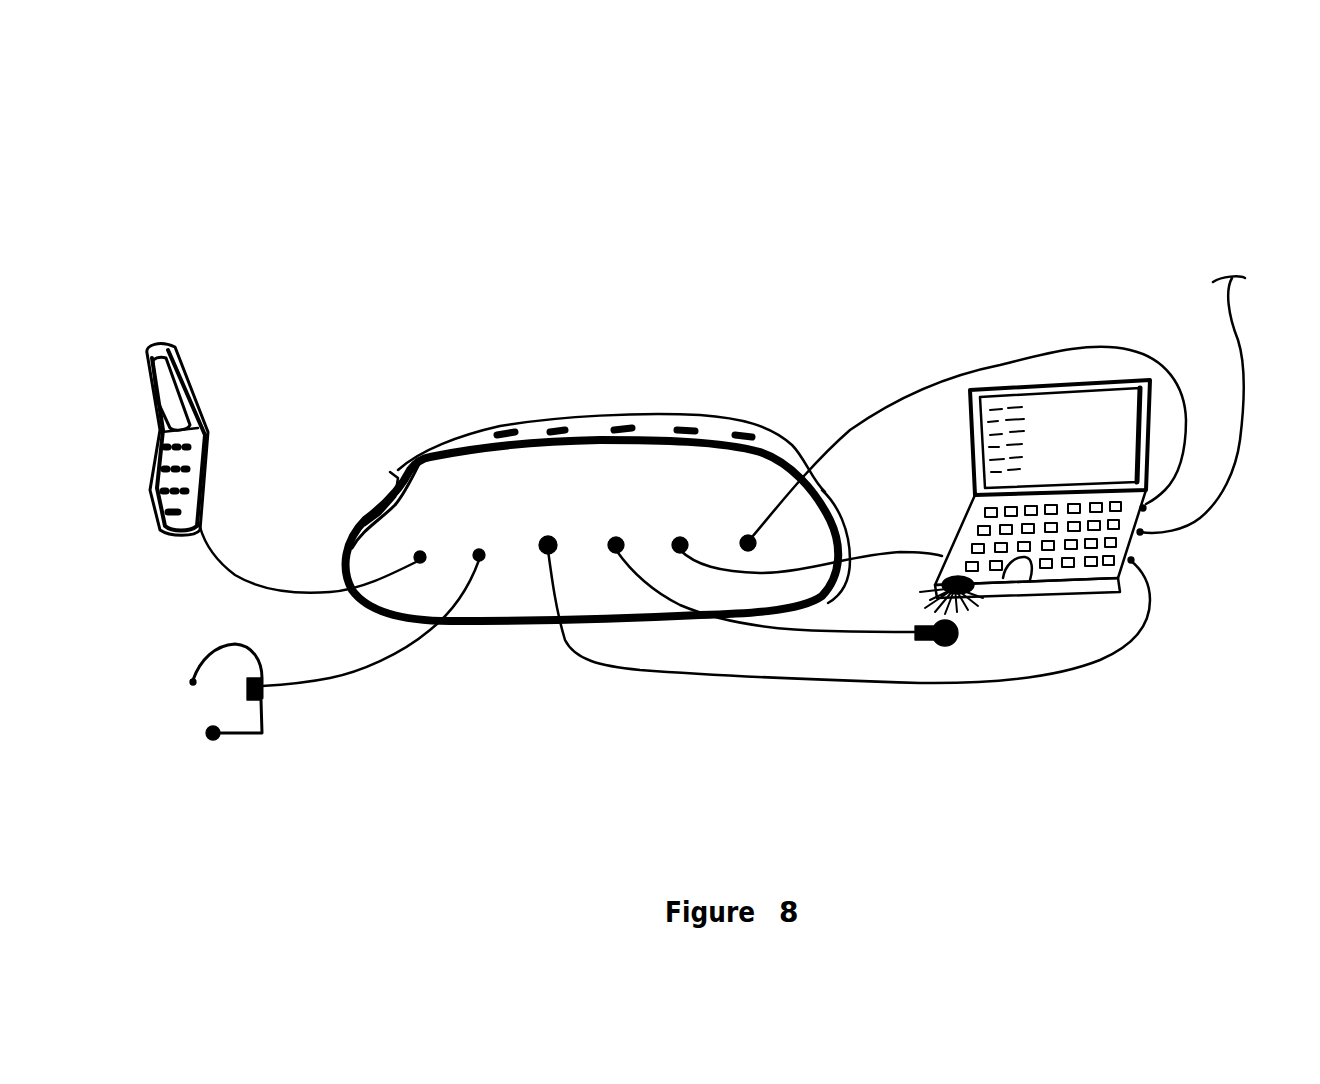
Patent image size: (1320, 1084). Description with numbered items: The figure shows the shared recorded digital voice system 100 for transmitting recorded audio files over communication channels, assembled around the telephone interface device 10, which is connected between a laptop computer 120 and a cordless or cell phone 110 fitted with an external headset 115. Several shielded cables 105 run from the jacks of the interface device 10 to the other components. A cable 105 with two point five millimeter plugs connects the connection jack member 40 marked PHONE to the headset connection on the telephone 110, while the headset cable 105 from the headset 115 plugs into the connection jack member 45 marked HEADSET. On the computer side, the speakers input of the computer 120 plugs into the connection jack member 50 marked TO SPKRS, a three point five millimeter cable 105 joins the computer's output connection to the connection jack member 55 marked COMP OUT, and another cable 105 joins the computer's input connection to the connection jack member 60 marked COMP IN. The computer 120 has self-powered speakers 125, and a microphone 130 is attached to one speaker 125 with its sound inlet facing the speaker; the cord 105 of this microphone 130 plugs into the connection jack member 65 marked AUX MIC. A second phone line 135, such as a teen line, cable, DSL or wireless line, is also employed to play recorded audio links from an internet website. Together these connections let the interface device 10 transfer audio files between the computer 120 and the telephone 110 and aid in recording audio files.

The shared recorded digital voice (SRDV) system 100 is at (812, 195).
The telephone interface device 10 is at (482, 625).
The connection jack member marked PHONE 40 is at (420, 552).
The connection jack member marked HEADSET 45 is at (479, 550).
The connection jack member marked TO SPKRS 50 is at (681, 538).
The connection jack member marked COMP OUT 55 is at (749, 538).
The connection jack member marked COMP IN 60 is at (549, 540).
The connection jack member marked AUX MIC 65 is at (617, 538).
The cable 105 is at (232, 572).
The cordless phone or cell phone 110 is at (200, 410).
The external headset 115 is at (268, 722).
The computer 120 is at (1072, 378).
The computer speaker 125 is at (985, 600).
The microphone 130 is at (935, 645).
The second phone line 135 is at (1213, 498).